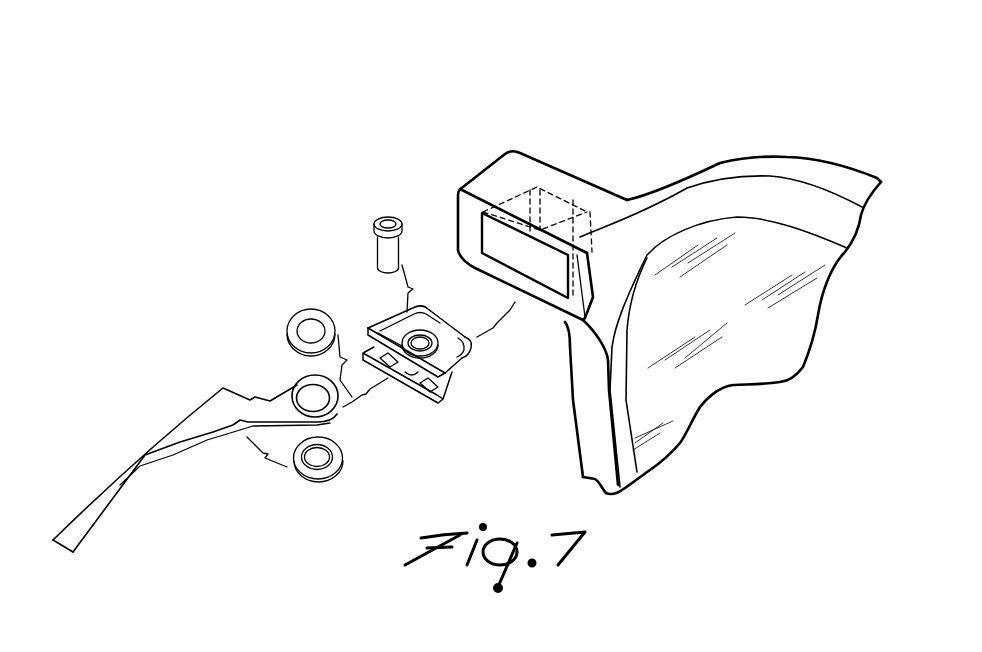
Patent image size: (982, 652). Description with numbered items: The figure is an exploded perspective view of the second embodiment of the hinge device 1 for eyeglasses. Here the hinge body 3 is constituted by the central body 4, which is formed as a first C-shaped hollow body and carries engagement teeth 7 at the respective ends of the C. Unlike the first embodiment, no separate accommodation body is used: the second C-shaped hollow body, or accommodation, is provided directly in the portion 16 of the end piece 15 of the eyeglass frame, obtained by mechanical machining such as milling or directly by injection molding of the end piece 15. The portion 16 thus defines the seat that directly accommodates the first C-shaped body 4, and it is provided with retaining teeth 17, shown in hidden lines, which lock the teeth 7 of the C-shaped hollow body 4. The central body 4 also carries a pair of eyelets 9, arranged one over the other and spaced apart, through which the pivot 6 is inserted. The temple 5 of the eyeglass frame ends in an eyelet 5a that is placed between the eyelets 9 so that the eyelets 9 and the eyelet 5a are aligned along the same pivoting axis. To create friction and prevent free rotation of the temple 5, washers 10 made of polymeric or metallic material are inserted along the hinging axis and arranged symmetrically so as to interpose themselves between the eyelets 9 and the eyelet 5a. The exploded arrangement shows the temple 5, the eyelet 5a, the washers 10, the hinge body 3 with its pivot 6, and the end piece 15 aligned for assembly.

The hinge device 1 is at (408, 131).
The hinge body 3 is at (337, 296).
The central body 4 is at (456, 378).
The temple 5 is at (93, 510).
The eyelet 5a is at (297, 386).
The pivot 6 is at (385, 257).
The engagement teeth 7 is at (467, 339).
The eyelets 9 is at (432, 338).
The washers 10 is at (293, 322).
The end piece 15 is at (568, 186).
The portion 16 is at (527, 255).
The retaining teeth 17 is at (538, 186).